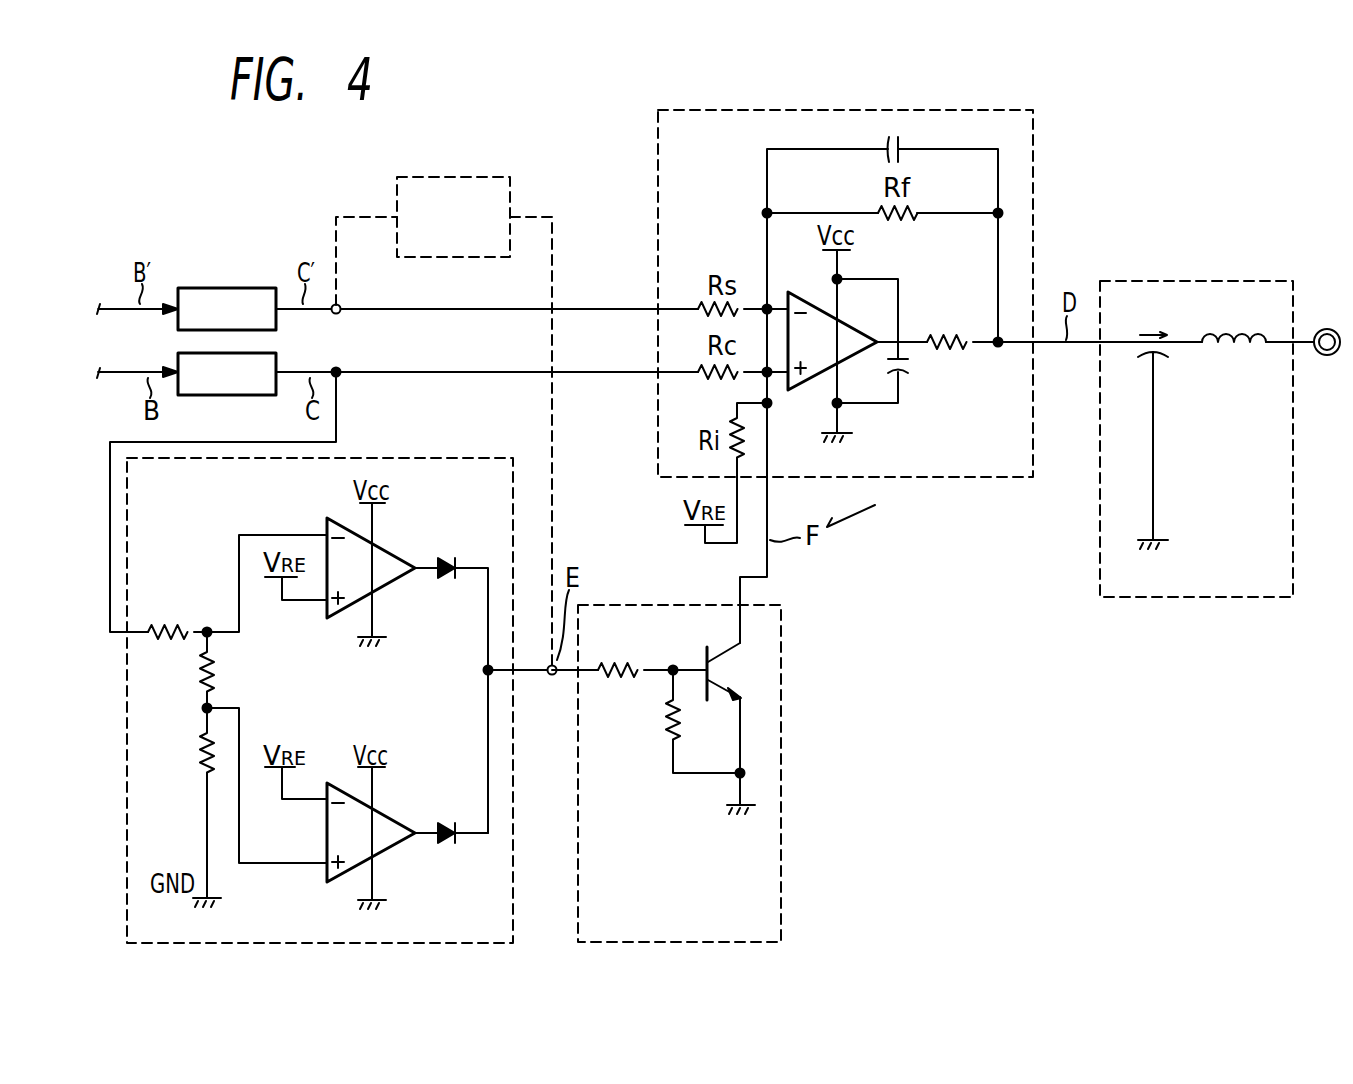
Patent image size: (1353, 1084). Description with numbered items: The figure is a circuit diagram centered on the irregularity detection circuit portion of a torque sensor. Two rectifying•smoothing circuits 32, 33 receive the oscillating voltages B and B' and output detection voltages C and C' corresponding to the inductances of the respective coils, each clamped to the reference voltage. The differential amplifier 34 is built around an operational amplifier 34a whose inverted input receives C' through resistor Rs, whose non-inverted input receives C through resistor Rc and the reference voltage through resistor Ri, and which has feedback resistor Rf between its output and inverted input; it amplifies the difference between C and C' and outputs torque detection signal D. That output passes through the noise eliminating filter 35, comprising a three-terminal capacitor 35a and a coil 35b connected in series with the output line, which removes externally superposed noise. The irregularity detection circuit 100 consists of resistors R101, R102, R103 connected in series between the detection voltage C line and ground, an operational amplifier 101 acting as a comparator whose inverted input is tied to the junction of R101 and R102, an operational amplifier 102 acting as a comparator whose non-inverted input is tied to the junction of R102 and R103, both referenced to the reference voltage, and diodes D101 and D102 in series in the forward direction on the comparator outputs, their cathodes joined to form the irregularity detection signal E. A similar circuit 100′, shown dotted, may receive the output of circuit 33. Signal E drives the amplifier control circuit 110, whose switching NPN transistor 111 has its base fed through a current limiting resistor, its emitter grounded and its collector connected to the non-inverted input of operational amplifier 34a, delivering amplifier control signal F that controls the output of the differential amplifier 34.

The rectifying•smoothing circuit 32 is at (223, 395).
The rectifying•smoothing circuit 33 is at (224, 288).
The differential amplifier 34 is at (1034, 148).
The operational amplifier 34a is at (812, 300).
The noise eliminating filter 35 is at (1240, 281).
The capacitor 35a is at (1158, 356).
The coil 35b is at (1226, 348).
The irregularity detection circuit 100 is at (438, 458).
The irregularity detection circuit 100′ is at (473, 176).
The operational amplifier 101 is at (390, 553).
The operational amplifier 102 is at (390, 817).
The amplifier control circuit 110 is at (781, 885).
The switching NPN transistor 111 is at (705, 657).
The resistor R101 is at (200, 580).
The resistor R102 is at (284, 663).
The resistor R103 is at (172, 783).
The diode D101 is at (447, 585).
The diode D102 is at (453, 852).